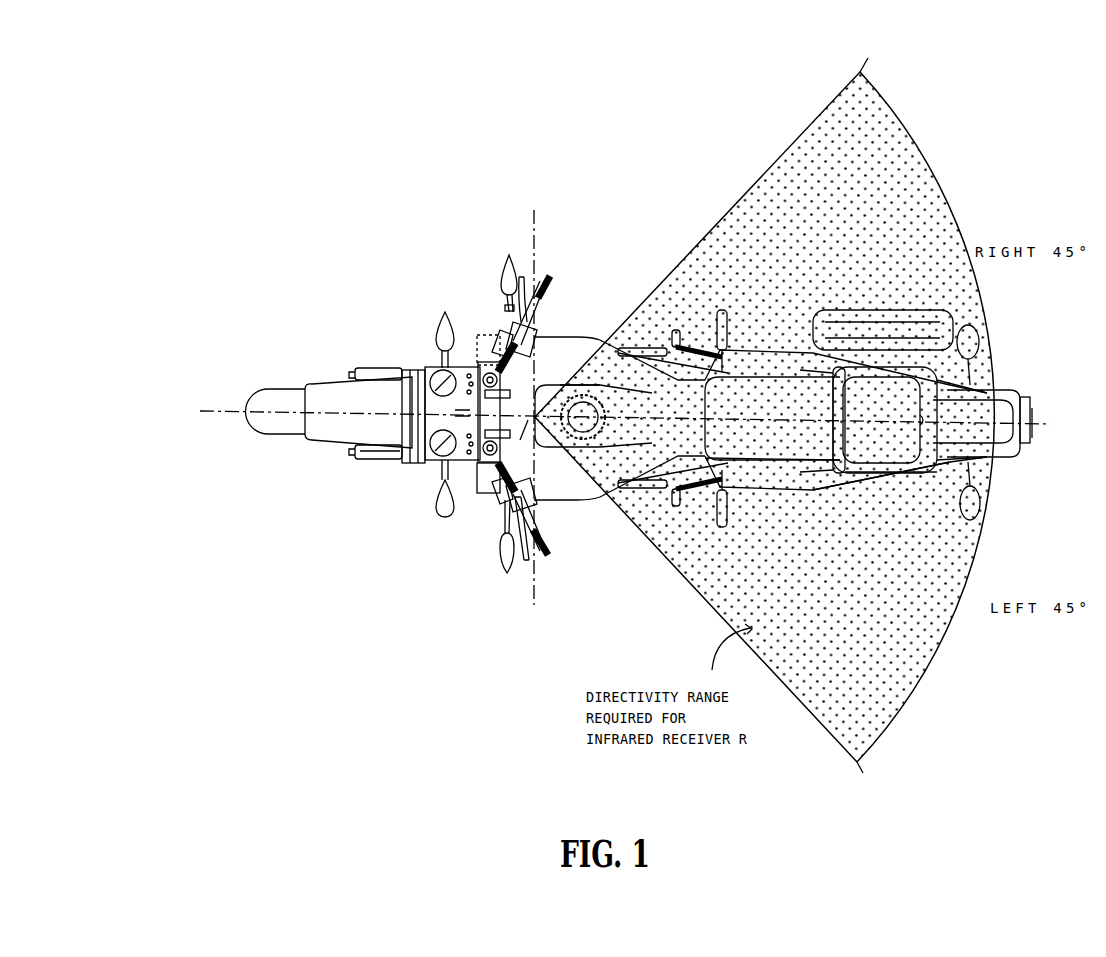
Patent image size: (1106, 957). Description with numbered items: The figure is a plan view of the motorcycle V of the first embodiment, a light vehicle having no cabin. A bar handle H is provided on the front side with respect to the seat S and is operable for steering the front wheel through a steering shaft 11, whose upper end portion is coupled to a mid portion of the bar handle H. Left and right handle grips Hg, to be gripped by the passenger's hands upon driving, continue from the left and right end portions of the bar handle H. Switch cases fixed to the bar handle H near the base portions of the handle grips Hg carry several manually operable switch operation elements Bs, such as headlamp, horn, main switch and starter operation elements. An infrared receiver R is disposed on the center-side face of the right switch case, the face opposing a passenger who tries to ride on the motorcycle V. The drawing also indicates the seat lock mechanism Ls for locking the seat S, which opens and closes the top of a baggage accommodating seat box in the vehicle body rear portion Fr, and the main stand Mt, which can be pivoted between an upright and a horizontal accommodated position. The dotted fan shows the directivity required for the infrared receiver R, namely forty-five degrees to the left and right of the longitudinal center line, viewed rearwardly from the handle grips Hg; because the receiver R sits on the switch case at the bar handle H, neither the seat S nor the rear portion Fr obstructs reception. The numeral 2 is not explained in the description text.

The motorcycle V is at (437, 555).
The bar handle H is at (550, 275).
The handle grips Hg is at (532, 287).
The switch operation elements Bs is at (536, 331).
The infrared receiver R is at (527, 358).
The meter unit / headlight housing 2 is at (592, 383).
The steering shaft 11 is at (525, 443).
The seat S is at (766, 456).
The main stand Mt is at (808, 500).
The vehicle body rear portion Fr is at (883, 483).
The seat lock mechanism Ls is at (925, 425).